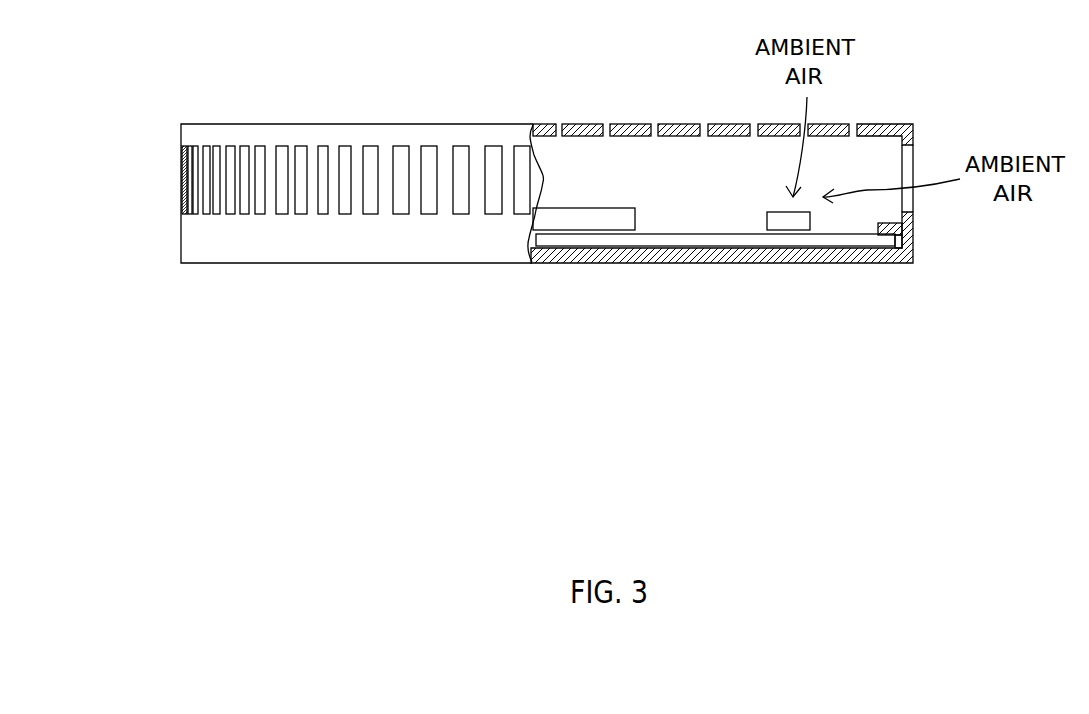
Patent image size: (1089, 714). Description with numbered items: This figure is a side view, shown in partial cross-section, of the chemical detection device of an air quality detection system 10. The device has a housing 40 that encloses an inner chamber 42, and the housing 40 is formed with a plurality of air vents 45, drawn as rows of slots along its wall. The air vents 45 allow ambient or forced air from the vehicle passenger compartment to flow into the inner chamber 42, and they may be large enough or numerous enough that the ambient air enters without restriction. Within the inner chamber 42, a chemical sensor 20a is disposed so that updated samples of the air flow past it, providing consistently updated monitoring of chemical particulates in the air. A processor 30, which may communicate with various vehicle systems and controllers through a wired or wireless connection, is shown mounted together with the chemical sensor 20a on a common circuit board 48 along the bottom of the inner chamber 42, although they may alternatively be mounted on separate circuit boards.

The air quality detection system 10 is at (561, 58).
The chemical sensor 20a is at (763, 220).
The processor 30 is at (613, 213).
The housing 40 is at (193, 241).
The inner chamber 42 is at (596, 185).
The air vents 45 is at (400, 150).
The circuit board 48 is at (592, 245).